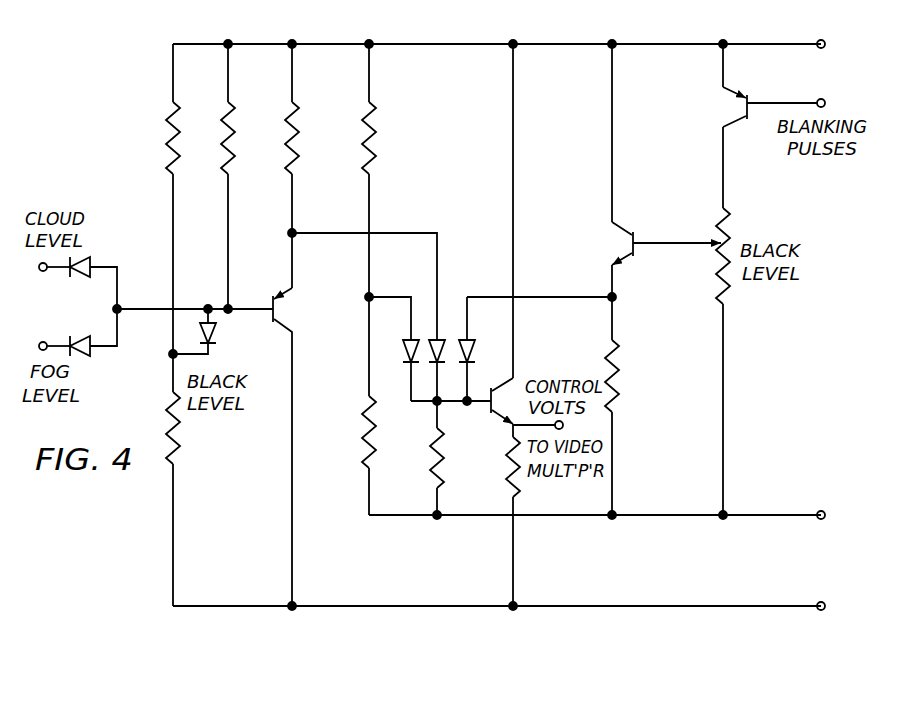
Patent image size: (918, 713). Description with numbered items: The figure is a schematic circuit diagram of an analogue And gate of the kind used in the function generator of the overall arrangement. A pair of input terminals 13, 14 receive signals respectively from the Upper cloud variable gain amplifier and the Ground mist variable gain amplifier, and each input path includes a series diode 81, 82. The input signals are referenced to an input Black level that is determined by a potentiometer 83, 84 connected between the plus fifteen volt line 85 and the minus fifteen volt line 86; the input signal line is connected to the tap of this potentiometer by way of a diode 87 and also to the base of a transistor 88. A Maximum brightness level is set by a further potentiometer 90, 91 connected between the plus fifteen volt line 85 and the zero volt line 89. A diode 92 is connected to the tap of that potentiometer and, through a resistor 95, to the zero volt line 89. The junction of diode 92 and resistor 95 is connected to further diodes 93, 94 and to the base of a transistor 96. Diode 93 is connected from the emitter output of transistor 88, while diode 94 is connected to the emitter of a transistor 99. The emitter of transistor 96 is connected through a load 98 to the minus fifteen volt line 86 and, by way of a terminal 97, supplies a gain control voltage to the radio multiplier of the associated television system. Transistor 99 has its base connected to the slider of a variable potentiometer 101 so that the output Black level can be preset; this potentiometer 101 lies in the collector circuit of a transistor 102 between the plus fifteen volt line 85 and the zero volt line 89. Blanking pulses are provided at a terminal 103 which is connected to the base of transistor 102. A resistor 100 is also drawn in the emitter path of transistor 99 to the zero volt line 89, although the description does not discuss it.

The input terminal 13 is at (50, 284).
The input terminal 14 is at (50, 332).
The series diode 81 is at (93, 262).
The series diode 82 is at (84, 334).
The potentiometer 83 is at (172, 130).
The potentiometer 84 is at (180, 430).
The +15 volt line 85 is at (442, 46).
The −15 volt line 86 is at (383, 607).
The diode 87 is at (215, 335).
The transistor 88 is at (270, 298).
The zero volt line 89 is at (397, 516).
The potentiometer 90 is at (364, 134).
The potentiometer 91 is at (364, 432).
The diode 92 is at (398, 355).
The diode 93 is at (427, 355).
The diode 94 is at (480, 349).
The resistor 95 is at (444, 452).
The transistor 96 is at (492, 386).
The terminal 97 is at (563, 425).
The load 98 is at (507, 477).
The transistor 99 is at (639, 241).
The resistor 100 is at (618, 368).
The variable potentiometer 101 is at (715, 269).
The transistor 102 is at (752, 99).
The terminal 103 is at (822, 98).